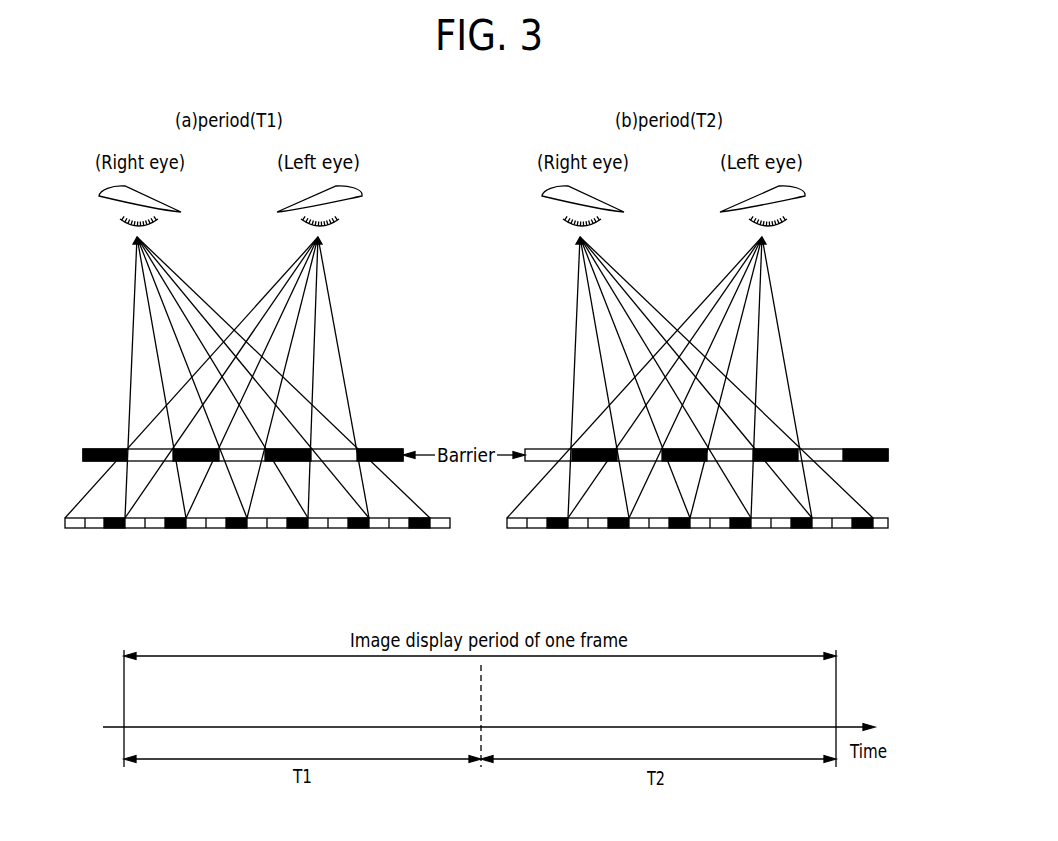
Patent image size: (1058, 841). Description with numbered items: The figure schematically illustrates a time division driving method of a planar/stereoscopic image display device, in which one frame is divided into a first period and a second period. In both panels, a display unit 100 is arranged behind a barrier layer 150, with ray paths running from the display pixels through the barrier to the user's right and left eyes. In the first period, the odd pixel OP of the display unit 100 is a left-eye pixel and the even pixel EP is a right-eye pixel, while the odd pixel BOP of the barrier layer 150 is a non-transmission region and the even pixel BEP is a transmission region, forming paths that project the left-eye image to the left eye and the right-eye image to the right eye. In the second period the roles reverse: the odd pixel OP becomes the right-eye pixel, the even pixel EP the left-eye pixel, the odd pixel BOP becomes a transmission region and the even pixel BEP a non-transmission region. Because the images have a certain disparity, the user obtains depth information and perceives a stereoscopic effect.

The barrier layer 150 is at (384, 449).
The display unit 100 is at (447, 528).
The odd pixel of the barrier layer BOP is at (97, 449).
The odd pixel OP is at (125, 528).
The even pixel EP is at (186, 528).
The even pixel of the barrier layer BEP is at (245, 462).